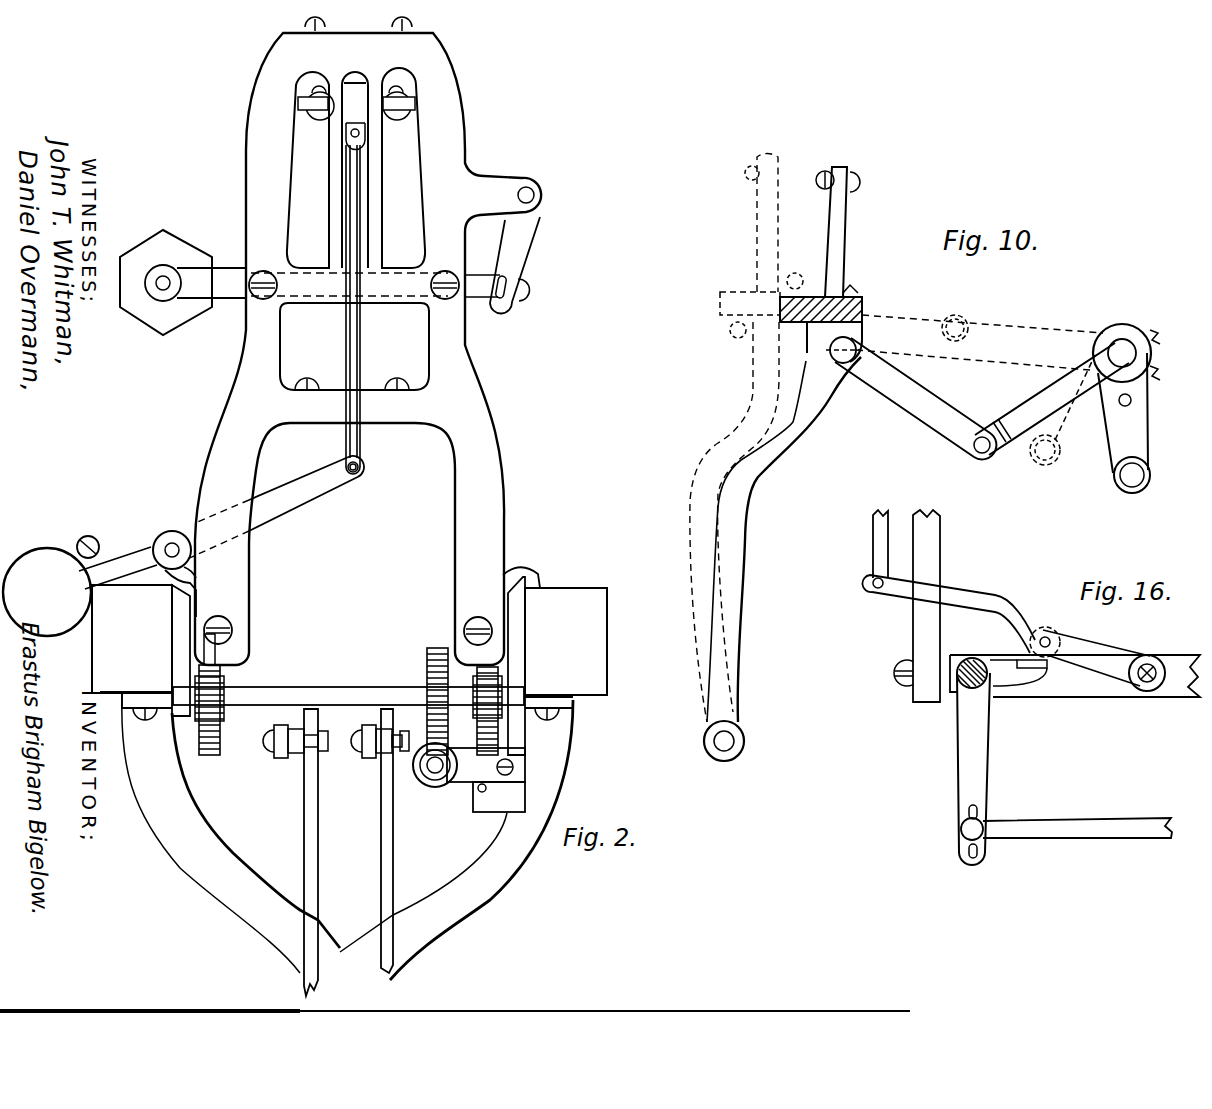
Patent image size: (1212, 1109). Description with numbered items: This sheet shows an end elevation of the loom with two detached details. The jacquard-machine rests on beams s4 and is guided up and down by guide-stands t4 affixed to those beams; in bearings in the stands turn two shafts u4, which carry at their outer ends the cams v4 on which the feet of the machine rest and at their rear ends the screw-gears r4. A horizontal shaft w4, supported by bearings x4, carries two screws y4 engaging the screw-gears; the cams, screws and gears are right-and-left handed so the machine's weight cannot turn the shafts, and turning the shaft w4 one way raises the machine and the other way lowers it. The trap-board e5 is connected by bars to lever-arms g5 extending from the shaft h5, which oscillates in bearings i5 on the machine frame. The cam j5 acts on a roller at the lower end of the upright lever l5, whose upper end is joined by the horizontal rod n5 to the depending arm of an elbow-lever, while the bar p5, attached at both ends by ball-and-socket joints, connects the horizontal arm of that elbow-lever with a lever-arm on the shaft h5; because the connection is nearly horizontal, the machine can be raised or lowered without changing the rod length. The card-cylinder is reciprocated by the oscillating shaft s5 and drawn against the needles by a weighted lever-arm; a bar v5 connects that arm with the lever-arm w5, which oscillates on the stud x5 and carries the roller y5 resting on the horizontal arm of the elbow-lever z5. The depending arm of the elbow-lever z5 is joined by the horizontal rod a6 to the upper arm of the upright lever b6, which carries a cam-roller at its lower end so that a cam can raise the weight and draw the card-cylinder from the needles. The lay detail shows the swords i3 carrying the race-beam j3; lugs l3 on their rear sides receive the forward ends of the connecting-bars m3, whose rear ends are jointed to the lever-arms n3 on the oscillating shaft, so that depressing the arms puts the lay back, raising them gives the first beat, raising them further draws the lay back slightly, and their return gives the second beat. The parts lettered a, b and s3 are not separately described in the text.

In FIG. 2, the frame b is at (368, 341).
In FIG. 2, the trap-board e5 is at (356, 103).
In FIG. 2, the bar p5 is at (359, 273).
In FIG. 2, the cam j5 is at (183, 282).
In FIG. 2, the oscillating shaft s5 is at (534, 195).
In FIG. 2, the lever-arms g5 is at (274, 508).
In FIG. 2, the shaft h5 is at (167, 540).
In FIG. 2, the bearings i5 is at (177, 544).
In FIG. 2, the guide-stands t4 is at (352, 592).
In FIG. 2, the beams s4 is at (349, 666).
In FIG. 2, the shafts u4 is at (348, 696).
In FIG. 2, the cams v4 is at (348, 703).
In FIG. 2, the screw-gear r4 is at (435, 692).
In FIG. 2, the horizontal rod n5 is at (295, 753).
In FIG. 2, the horizontal rod a6 is at (380, 753).
In FIG. 16, the horizontal rod a6 is at (1077, 823).
In FIG. 2, the screws y4 is at (429, 772).
In FIG. 2, the horizontal shaft w4 is at (438, 776).
In FIG. 2, the bearings x4 is at (486, 780).
In FIG. 2, the upright lever l5 is at (304, 852).
In FIG. 2, the upright lever b6 is at (398, 841).
In FIG. 2, the bracket body a is at (336, 836).
In FIG. 10, the swords i3 is at (775, 458).
In FIG. 10, the race-beam j3 is at (866, 308).
In FIG. 10, the lugs l3 is at (834, 350).
In FIG. 10, the connecting-bars m3 is at (969, 387).
In FIG. 10, the lever-arms n3 is at (1052, 404).
In FIG. 10, the crank arm s3 is at (1126, 408).
In FIG. 16, the bar v5 is at (876, 560).
In FIG. 16, the lever-arm w5 is at (948, 614).
In FIG. 16, the roller y5 is at (1056, 618).
In FIG. 16, the stud x5 is at (1075, 663).
In FIG. 16, the elbow-lever z5 is at (973, 761).